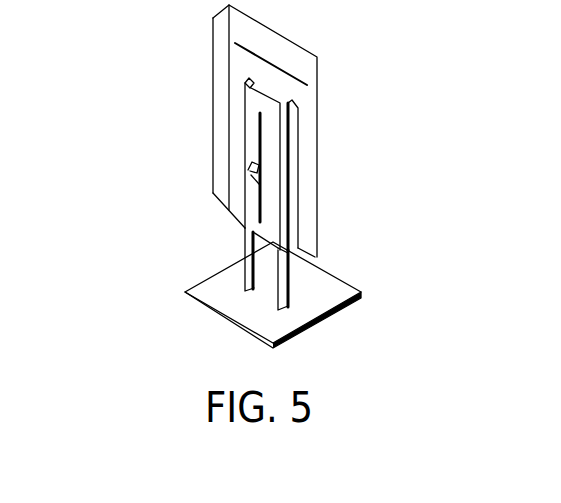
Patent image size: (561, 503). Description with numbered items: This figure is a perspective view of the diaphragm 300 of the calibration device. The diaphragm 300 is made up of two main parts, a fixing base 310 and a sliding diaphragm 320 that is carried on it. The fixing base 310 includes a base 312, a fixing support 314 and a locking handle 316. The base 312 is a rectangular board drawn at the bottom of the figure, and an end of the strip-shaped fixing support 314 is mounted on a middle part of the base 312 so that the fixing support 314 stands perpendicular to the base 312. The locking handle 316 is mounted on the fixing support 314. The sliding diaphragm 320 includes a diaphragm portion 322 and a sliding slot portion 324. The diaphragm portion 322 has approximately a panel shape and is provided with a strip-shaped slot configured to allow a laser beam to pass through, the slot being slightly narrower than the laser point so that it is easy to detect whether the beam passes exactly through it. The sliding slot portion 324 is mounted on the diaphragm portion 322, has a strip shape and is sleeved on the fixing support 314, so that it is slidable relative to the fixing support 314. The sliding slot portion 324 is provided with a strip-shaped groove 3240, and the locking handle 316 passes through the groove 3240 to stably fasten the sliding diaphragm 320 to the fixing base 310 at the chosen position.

The diaphragm 300 is at (349, 62).
The fixing base 310 is at (130, 131).
The base 312 is at (187, 293).
The fixing support 314 is at (246, 244).
The locking handle 316 is at (250, 168).
The sliding diaphragm 320 is at (131, 2).
The diaphragm portion 322 is at (214, 19).
The sliding slot portion 324 is at (253, 128).
The groove 3240 is at (262, 144).